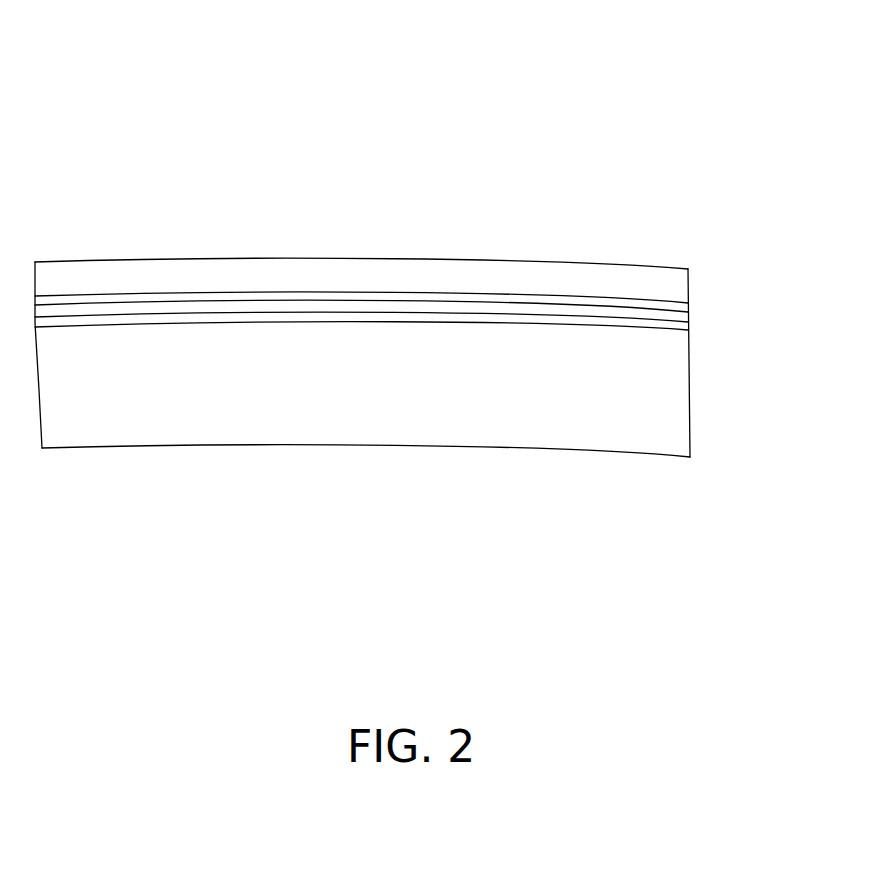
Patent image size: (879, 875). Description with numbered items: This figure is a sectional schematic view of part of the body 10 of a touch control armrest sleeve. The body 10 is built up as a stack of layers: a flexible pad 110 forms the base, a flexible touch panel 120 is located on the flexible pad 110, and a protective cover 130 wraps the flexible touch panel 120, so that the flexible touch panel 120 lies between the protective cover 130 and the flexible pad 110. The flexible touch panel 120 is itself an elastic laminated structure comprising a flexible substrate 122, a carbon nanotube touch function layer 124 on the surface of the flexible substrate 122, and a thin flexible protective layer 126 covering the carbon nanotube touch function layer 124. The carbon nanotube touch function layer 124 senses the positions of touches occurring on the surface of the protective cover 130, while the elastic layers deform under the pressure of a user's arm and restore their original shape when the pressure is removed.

The body 10 is at (375, 88).
The flexible pad 110 is at (663, 428).
The flexible touch panel 120 is at (781, 279).
The flexible substrate 122 is at (662, 328).
The carbon nanotube touch function layer 124 is at (688, 322).
The flexible protective layer 126 is at (688, 303).
The protective cover 130 is at (167, 272).